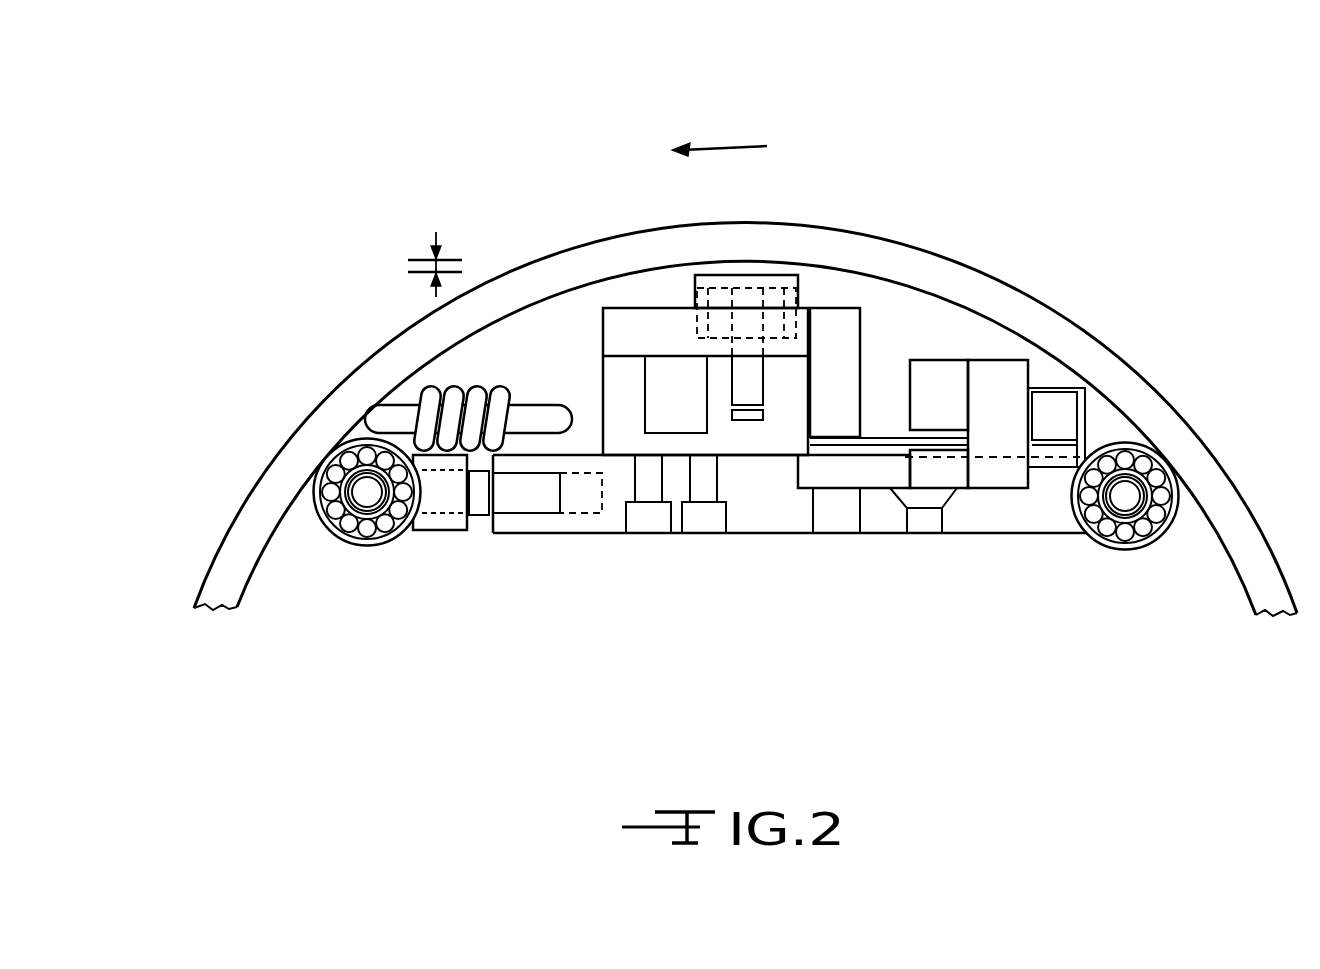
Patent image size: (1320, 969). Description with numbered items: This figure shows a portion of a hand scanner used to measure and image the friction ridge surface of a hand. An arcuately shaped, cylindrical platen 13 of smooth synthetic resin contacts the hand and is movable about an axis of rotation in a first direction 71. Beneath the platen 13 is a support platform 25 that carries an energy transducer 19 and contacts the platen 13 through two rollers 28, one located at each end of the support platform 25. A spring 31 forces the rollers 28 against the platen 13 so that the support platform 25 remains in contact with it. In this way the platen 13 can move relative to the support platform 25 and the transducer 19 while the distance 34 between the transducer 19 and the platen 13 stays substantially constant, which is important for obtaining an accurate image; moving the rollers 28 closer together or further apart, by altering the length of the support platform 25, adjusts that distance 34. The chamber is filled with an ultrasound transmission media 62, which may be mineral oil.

The platen 13 is at (1022, 293).
The energy transducer 19 is at (800, 292).
The support platform 25 is at (797, 535).
The rollers 28 is at (395, 525).
The spring 31 is at (508, 382).
The distance 34 is at (408, 262).
The ultrasound transmission media 62 is at (675, 303).
The first direction 71 is at (745, 148).